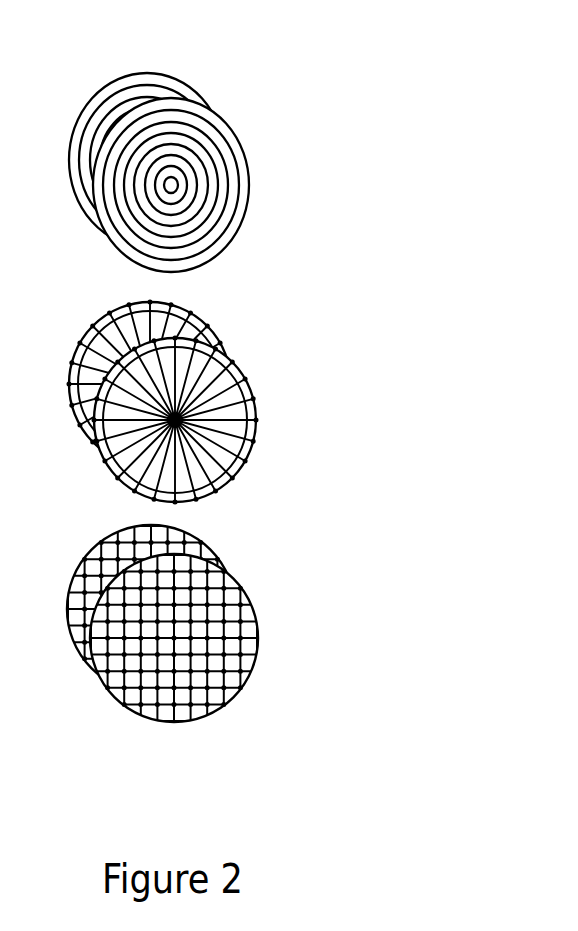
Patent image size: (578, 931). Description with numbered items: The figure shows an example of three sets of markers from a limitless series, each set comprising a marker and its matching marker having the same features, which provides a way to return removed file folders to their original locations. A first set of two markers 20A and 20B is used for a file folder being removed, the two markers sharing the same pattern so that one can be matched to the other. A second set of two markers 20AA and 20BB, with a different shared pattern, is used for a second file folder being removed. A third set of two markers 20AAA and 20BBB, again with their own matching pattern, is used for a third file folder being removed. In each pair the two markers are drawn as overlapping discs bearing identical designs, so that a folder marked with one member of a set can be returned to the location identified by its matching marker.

The marker 20A is at (175, 75).
The marker 20B is at (246, 158).
The marker 20AA is at (198, 318).
The marker 20BB is at (251, 427).
The marker 20AAA is at (185, 533).
The marker 20BBB is at (261, 640).